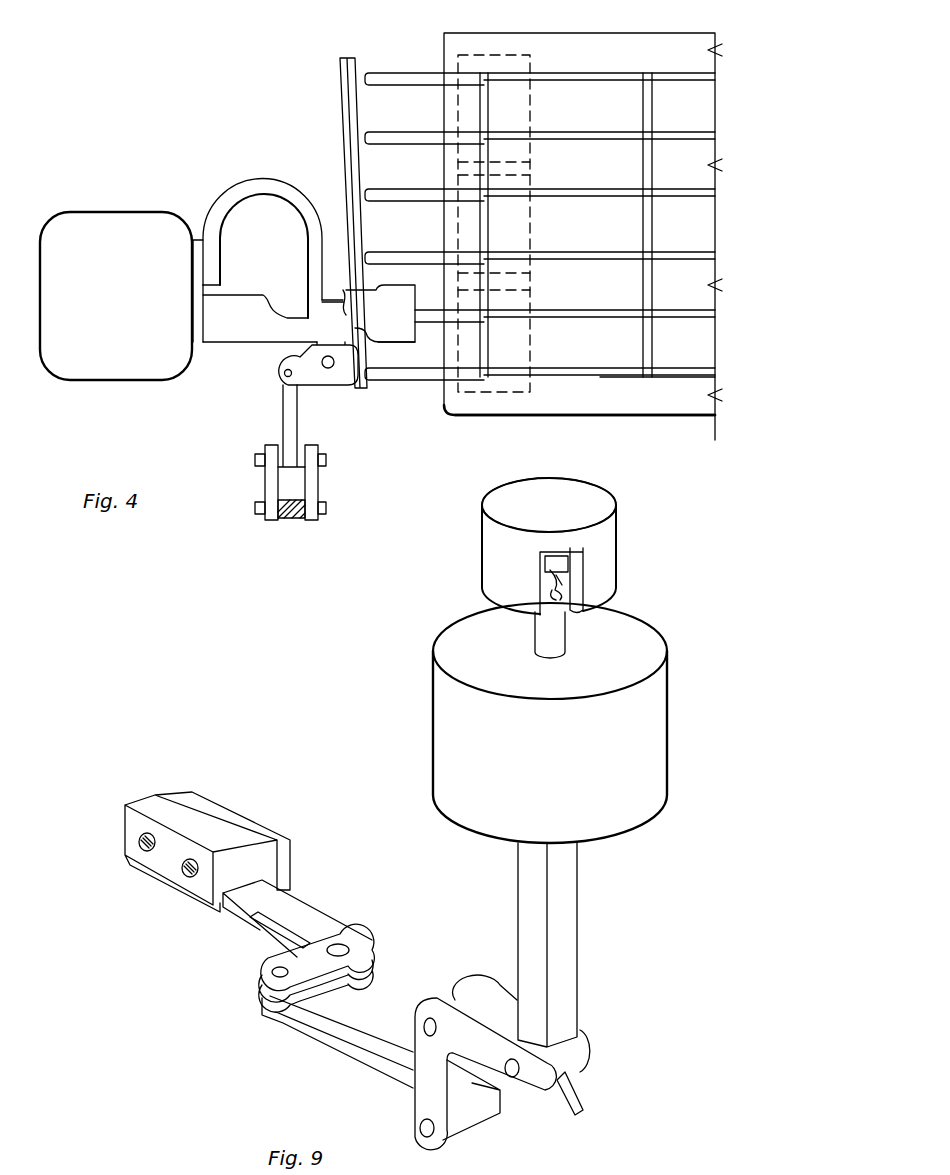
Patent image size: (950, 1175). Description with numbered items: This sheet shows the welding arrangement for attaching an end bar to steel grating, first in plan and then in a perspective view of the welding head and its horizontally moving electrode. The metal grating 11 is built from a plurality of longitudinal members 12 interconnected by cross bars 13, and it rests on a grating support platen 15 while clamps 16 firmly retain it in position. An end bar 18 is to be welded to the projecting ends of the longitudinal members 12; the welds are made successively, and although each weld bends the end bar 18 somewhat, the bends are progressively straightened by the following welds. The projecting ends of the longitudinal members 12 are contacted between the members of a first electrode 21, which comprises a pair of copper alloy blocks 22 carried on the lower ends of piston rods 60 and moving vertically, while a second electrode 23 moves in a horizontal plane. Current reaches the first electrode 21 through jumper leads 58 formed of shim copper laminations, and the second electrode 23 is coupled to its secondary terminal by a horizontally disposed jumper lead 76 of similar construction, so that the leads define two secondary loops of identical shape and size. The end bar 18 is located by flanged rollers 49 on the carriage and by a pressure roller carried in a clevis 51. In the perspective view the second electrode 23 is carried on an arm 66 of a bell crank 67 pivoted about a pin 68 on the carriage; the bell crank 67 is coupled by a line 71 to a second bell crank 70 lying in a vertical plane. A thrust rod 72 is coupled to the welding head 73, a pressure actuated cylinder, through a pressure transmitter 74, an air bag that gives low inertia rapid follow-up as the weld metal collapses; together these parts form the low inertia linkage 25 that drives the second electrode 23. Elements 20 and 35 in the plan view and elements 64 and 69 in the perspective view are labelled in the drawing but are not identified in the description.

In FIG. 4, the metal grating 11 is at (662, 58).
In FIG. 4, the longitudinal members 12 is at (570, 80).
In FIG. 4, the cross bars 13 is at (486, 113).
In FIG. 4, the grating support platen 15 is at (578, 415).
In FIG. 4, the clamps 16 is at (530, 57).
In FIG. 4, the end bar 18 is at (340, 112).
In FIG. 4, the lower frame portion 20 is at (549, 400).
In FIG. 4, the first electrode 21 is at (396, 352).
In FIG. 4, the blocks 22 is at (382, 315).
In FIG. 4, the second electrode 23 is at (330, 298).
In FIG. 9, the second electrode 23 is at (286, 852).
In FIG. 4, the linkage 25 is at (273, 464).
In FIG. 9, the linkage 25 is at (457, 858).
In FIG. 4, the base bar 35 is at (643, 406).
In FIG. 4, the flanged rollers 49 is at (98, 302).
In FIG. 4, the clevis 51 is at (193, 238).
In FIG. 4, the jumper leads 58 is at (233, 340).
In FIG. 9, the piston rods 60 is at (598, 505).
In FIG. 9, the pin 64 is at (560, 1092).
In FIG. 9, the arm 66 is at (290, 900).
In FIG. 4, the bell crank 67 is at (321, 376).
In FIG. 9, the bell crank 67 is at (338, 912).
In FIG. 9, the pin 68 is at (352, 947).
In FIG. 9, the block 69 is at (562, 562).
In FIG. 4, the second bell crank 70 is at (308, 487).
In FIG. 9, the second bell crank 70 is at (574, 589).
In FIG. 4, the line 71 is at (296, 430).
In FIG. 9, the line 71 is at (310, 1030).
In FIG. 4, the thrust rod 72 is at (278, 516).
In FIG. 9, the thrust rod 72 is at (578, 920).
In FIG. 9, the welding head 73 is at (480, 546).
In FIG. 9, the pressure transmitter 74 is at (658, 712).
In FIG. 4, the jumper lead 76 is at (250, 185).